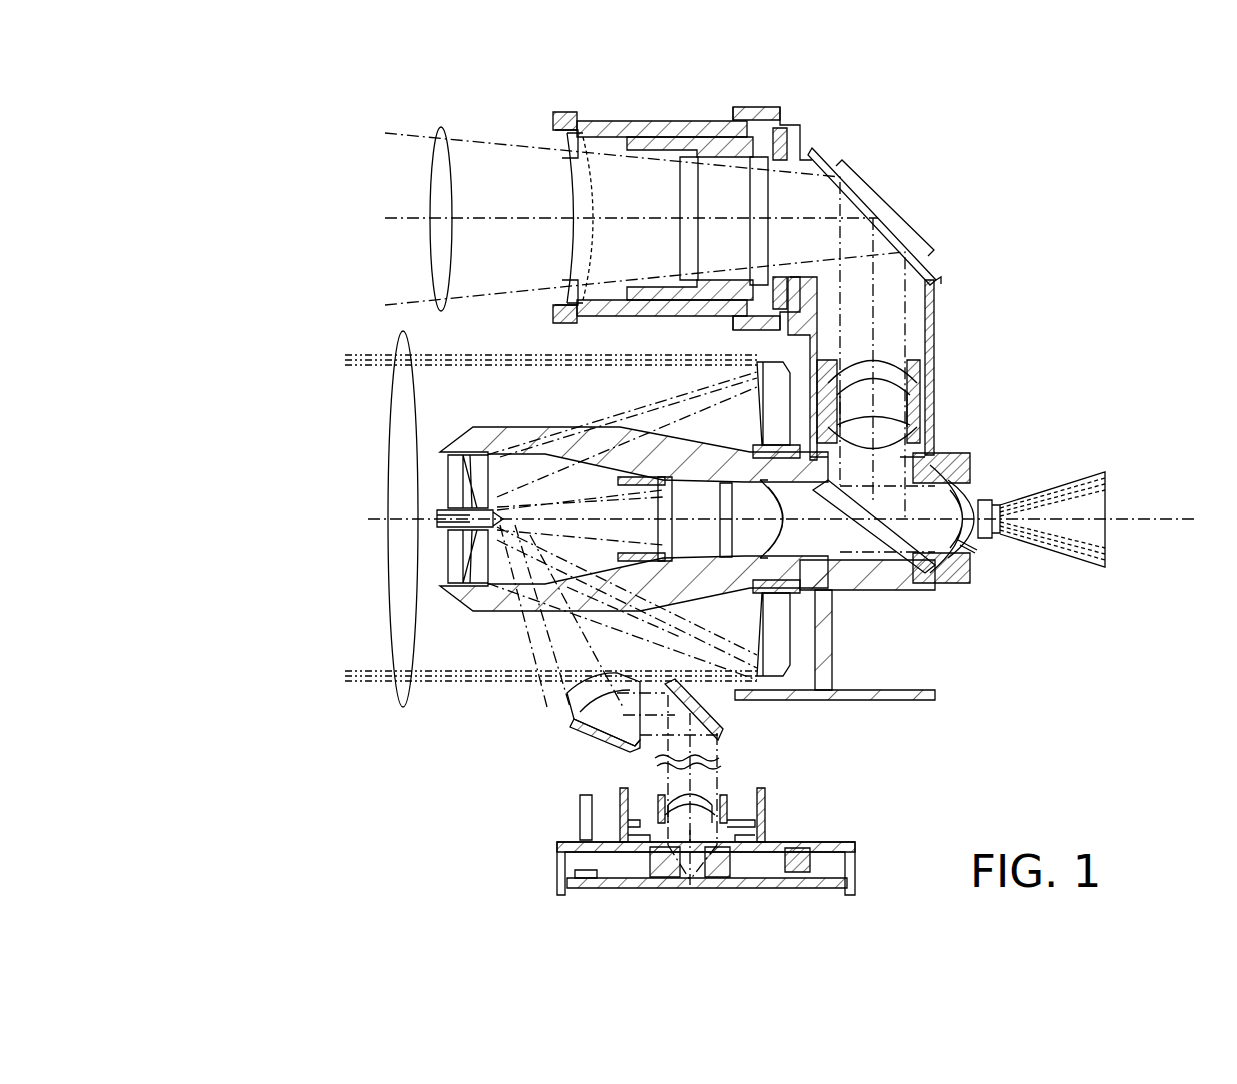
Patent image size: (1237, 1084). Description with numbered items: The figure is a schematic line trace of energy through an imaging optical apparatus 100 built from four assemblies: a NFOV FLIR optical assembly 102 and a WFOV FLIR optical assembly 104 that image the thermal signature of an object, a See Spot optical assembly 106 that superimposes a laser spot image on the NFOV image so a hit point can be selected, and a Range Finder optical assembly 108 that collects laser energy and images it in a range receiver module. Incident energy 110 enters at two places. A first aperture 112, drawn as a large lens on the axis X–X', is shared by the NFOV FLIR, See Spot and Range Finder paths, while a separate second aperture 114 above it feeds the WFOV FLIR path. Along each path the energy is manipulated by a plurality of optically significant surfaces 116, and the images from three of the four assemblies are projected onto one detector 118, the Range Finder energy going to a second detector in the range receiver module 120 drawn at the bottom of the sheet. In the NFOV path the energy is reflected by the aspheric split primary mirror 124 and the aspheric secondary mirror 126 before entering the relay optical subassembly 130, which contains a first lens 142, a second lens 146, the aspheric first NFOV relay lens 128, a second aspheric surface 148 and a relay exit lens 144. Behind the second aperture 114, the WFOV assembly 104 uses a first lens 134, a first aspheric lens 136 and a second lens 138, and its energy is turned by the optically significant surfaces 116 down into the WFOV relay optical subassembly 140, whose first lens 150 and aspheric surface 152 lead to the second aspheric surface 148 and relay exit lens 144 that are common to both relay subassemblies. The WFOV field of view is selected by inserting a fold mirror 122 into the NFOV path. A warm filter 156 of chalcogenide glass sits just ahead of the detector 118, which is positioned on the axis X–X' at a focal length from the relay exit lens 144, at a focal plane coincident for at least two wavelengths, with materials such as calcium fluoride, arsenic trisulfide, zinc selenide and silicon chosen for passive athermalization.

The imaging optical apparatus 100 is at (990, 156).
The NFOV FLIR optical assembly 102 is at (370, 582).
The WFOV FLIR optical assembly 104 is at (400, 170).
The See Spot optical assembly 106 is at (370, 447).
The Range Finder optical assembly 108 is at (533, 864).
The incident energy 110 is at (441, 128).
The first aperture 112 is at (265, 352).
The second aperture 114 is at (280, 127).
The optically significant surfaces 116 is at (786, 190).
The detector 118 is at (1110, 497).
The image sensor 120 is at (691, 859).
The fold mirror 122 is at (972, 550).
The split primary mirror 124 is at (788, 415).
The secondary mirror 126 is at (468, 478).
The first NFOV relay lens 128 is at (793, 512).
The relay optical subassembly 130 is at (752, 535).
The first lens 134 is at (575, 116).
The first aspheric lens 136 is at (689, 158).
The second lens 138 is at (797, 138).
The WFOV relay optical subassembly 140 is at (890, 343).
The first lens 142 is at (674, 512).
The relay exit lens 144 is at (965, 492).
The second lens 146 is at (733, 512).
The second aspheric surface 148 is at (945, 463).
The first lens 150 is at (893, 372).
The aspheric surface 152 is at (905, 433).
The warm filter 156 is at (992, 503).